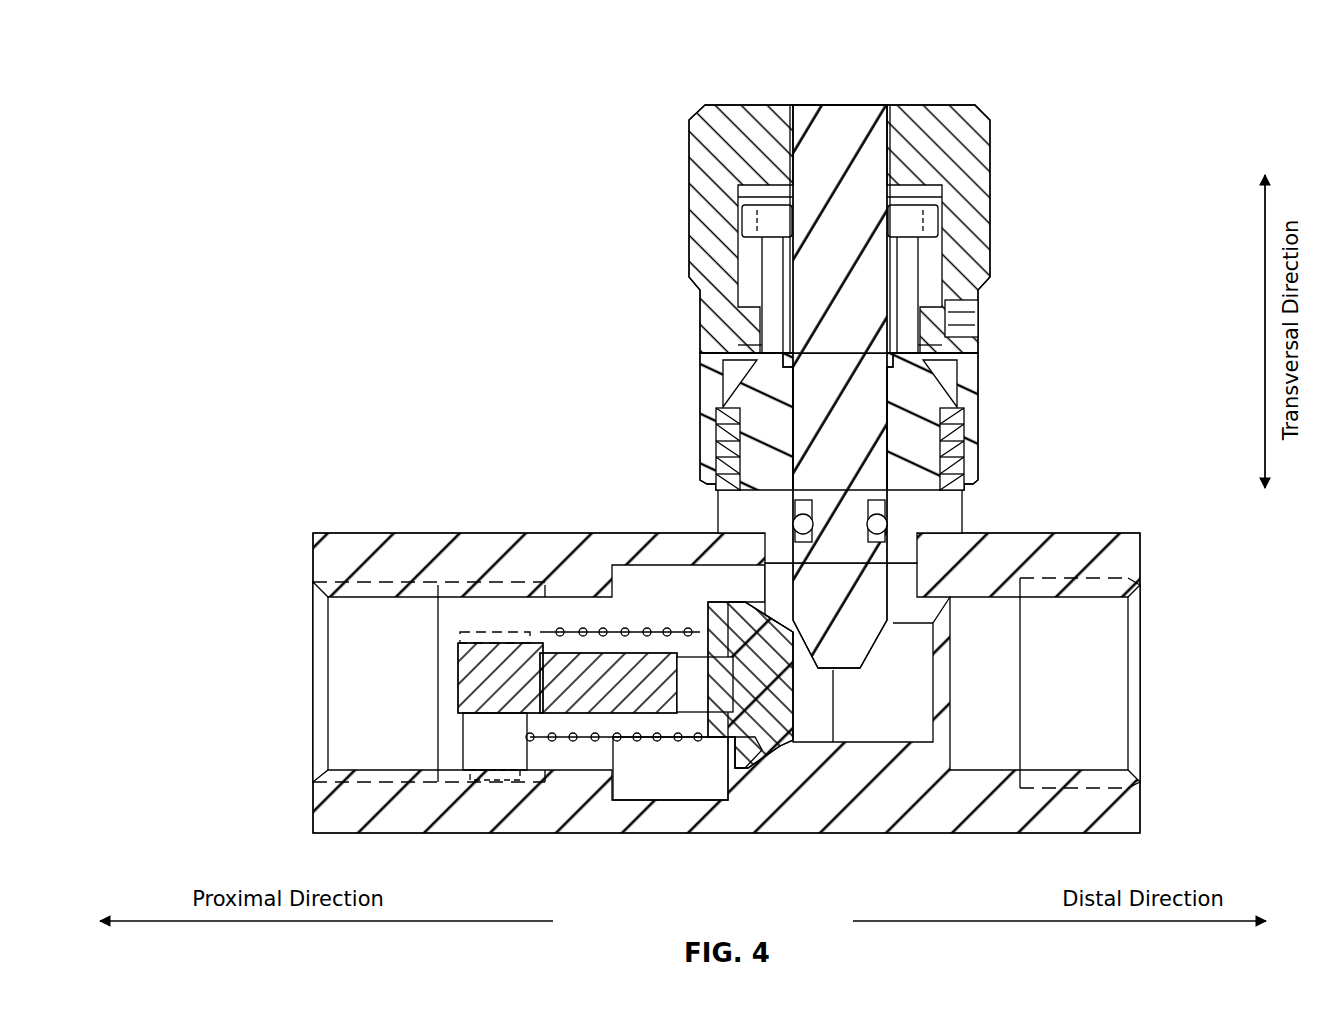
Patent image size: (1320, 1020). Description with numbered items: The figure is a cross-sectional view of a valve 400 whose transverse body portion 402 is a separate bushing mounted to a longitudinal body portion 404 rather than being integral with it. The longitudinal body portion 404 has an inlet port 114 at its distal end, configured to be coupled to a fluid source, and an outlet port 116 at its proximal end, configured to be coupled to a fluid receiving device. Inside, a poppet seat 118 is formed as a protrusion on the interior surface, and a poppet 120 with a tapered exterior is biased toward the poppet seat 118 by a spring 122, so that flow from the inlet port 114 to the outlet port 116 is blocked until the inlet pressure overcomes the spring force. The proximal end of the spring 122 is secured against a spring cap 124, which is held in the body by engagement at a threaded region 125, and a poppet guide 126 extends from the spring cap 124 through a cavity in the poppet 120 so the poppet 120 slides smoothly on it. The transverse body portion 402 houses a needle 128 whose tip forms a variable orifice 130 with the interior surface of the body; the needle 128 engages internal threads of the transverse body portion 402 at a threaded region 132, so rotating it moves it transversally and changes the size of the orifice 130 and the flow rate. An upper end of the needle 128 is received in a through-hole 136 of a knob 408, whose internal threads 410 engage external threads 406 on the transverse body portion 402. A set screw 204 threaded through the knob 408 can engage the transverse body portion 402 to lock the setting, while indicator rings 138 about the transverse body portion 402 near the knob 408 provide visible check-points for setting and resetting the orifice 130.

The valve 400 is at (505, 182).
The longitudinal body portion 404 is at (1108, 535).
The outlet port 116 is at (310, 722).
The inlet port 114 is at (1145, 724).
The spring cap 124 is at (502, 650).
The threaded region 125 is at (495, 778).
The poppet guide 126 is at (597, 690).
The spring 122 is at (637, 742).
The poppet seat 118 is at (775, 762).
The poppet 120 is at (757, 742).
The orifice 130 is at (842, 712).
The knob 408 is at (700, 105).
The internal threads 410 is at (735, 372).
The set screw 204 is at (950, 335).
The transverse body portion 402 is at (757, 455).
The indicator rings 138 is at (960, 438).
The threaded region 132 is at (897, 262).
The external threads 406 is at (937, 218).
The needle 128 is at (820, 103).
The through-hole 136 is at (888, 103).